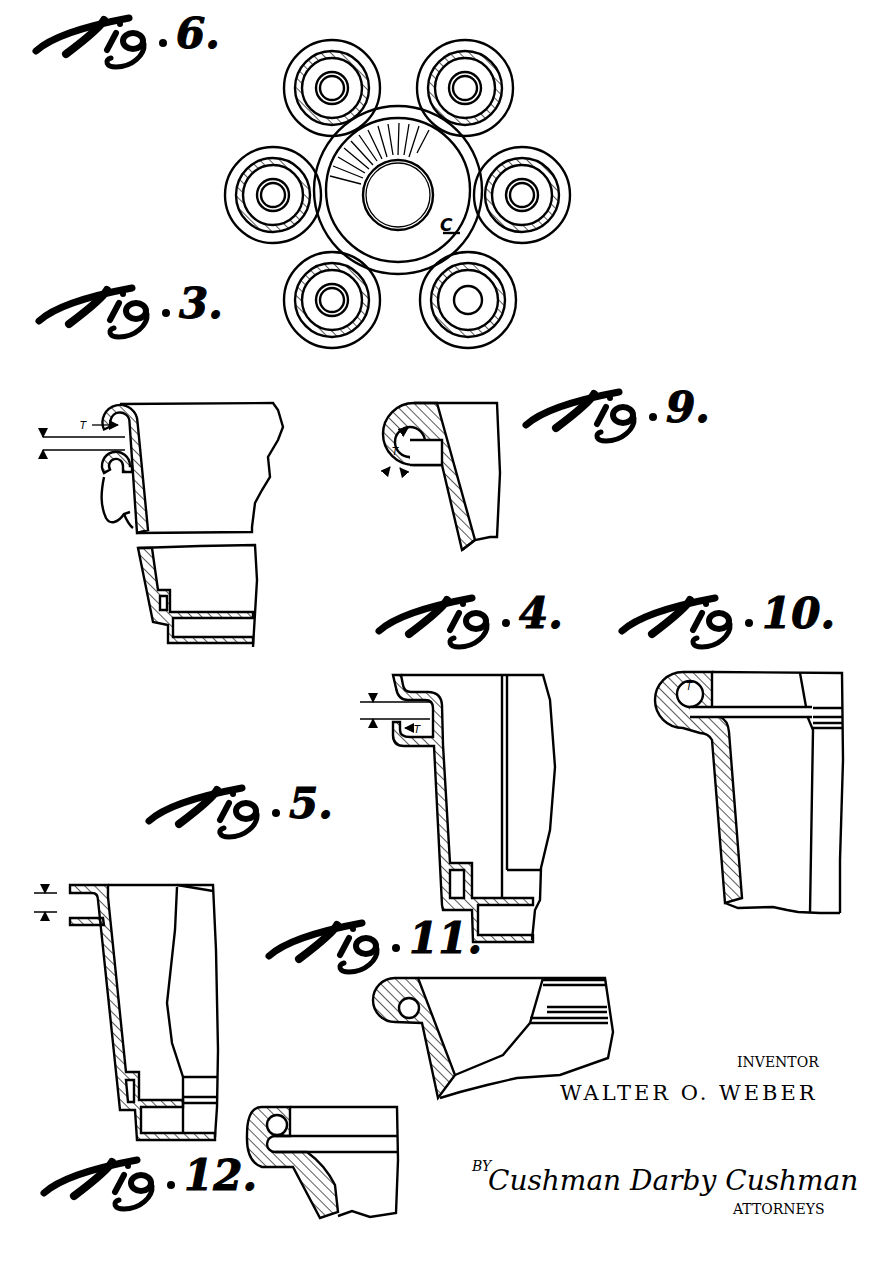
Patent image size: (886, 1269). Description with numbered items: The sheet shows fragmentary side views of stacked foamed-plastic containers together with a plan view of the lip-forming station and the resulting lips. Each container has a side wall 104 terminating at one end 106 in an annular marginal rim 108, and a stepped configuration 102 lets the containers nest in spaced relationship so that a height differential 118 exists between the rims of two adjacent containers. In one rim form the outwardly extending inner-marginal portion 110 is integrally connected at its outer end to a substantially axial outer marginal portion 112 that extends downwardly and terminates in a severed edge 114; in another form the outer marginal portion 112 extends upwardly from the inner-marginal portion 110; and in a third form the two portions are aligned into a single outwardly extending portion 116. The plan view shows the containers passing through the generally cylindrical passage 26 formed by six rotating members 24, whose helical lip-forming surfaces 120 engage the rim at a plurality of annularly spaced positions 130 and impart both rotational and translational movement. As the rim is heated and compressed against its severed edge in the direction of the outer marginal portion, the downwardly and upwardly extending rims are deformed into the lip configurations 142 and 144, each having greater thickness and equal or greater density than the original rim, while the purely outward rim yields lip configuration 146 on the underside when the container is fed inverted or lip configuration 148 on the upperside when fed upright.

In FIG. 6, the members 24 is at (513, 80).
In FIG. 6, the generally cylindrical passage 26 is at (482, 150).
In FIG. 6, the annularly spaced positions 130 is at (446, 258).
In FIG. 6, the lip-forming surfaces 120 is at (510, 275).
In FIG. 3, the stepped configuration 102 is at (172, 598).
In FIG. 3, the side wall 104 is at (128, 515).
In FIG. 3, the one end 106 is at (140, 467).
In FIG. 3, the annular marginal rim 108 is at (132, 452).
In FIG. 3, the inner-marginal portion 110 is at (107, 517).
In FIG. 4, the inner-marginal portion 110 is at (430, 689).
In FIG. 5, the inner-marginal portion 110 is at (112, 904).
In FIG. 3, the outer marginal portion 112 is at (100, 468).
In FIG. 4, the outer marginal portion 112 is at (395, 690).
In FIG. 5, the outer marginal portion 112 is at (72, 894).
In FIG. 3, the severed edge 114 is at (106, 484).
In FIG. 4, the severed edge 114 is at (403, 674).
In FIG. 5, the outwardly extending portion 116 is at (92, 879).
In FIG. 3, the height differential 118 is at (43, 437).
In FIG. 4, the height differential 118 is at (392, 728).
In FIG. 5, the height differential 118 is at (38, 901).
In FIG. 9, the lip configuration 142 is at (402, 470).
In FIG. 10, the lip configuration 144 is at (700, 681).
In FIG. 11, the lip configuration 146 is at (393, 1013).
In FIG. 12, the lip configuration 148 is at (281, 1122).